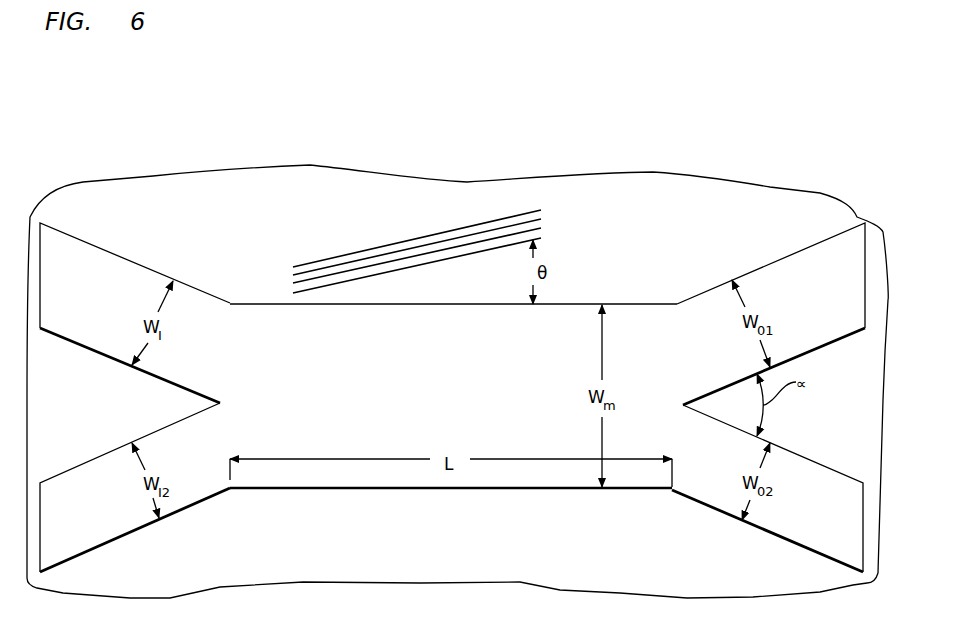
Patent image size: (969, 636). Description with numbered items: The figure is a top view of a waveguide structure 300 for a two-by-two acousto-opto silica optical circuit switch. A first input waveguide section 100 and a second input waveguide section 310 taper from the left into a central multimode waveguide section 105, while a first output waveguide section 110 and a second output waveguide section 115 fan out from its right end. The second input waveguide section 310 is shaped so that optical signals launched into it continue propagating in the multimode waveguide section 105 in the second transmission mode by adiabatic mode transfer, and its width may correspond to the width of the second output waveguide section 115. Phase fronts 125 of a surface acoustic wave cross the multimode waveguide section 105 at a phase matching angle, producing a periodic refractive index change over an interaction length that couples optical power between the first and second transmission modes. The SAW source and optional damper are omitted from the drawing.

The first input waveguide section 100 is at (88, 243).
The second input waveguide section 310 is at (107, 543).
The first output waveguide section 110 is at (816, 244).
The second output waveguide section 115 is at (763, 529).
The waveguide structure 300 is at (626, 304).
The multimode waveguide section 105 is at (387, 488).
The phase fronts of a surface acoustic wave 125 is at (293, 283).